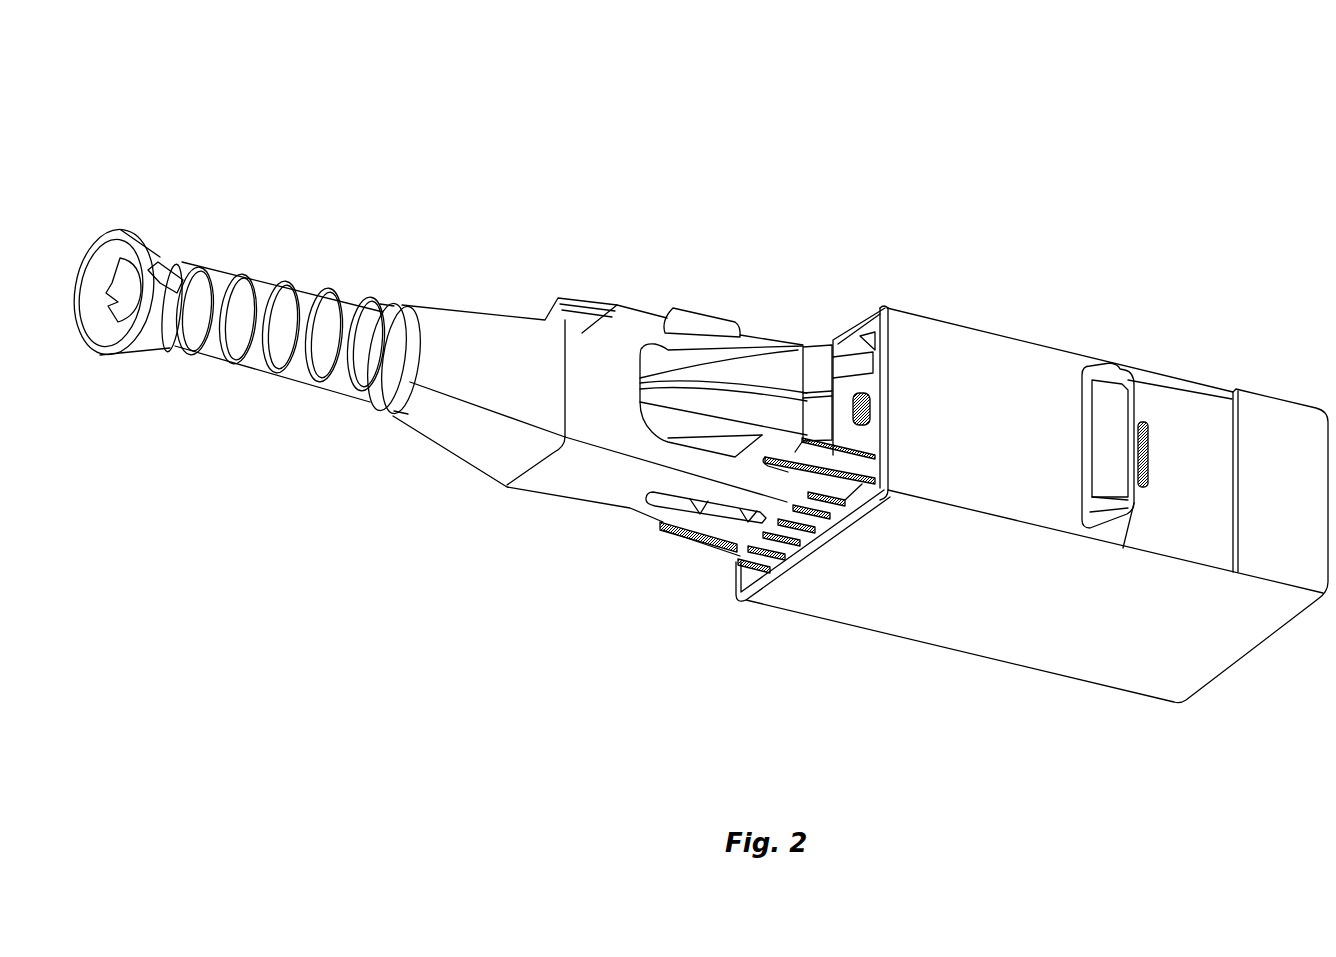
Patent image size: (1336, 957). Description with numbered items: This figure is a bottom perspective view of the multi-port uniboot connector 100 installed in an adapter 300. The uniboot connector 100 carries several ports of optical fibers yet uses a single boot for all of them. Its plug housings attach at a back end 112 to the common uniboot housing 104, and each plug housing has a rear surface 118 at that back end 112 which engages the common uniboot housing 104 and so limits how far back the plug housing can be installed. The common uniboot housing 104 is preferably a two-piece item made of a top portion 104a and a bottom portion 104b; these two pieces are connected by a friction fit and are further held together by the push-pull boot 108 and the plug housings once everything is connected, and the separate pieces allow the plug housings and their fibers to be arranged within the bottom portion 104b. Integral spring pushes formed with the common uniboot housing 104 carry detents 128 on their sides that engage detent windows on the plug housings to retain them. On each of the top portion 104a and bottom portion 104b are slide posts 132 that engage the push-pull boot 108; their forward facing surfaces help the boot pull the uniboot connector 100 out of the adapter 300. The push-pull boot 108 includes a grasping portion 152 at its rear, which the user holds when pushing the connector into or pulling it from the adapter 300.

The uniboot connector 100 is at (858, 136).
The common uniboot housing 104 is at (807, 312).
The top portion 104a is at (748, 368).
The bottom portion 104b is at (653, 532).
The push-pull boot 108 is at (250, 382).
The back end 112 is at (816, 345).
The rear surface 118 is at (843, 430).
The detents 128 is at (867, 393).
The slide posts 132 is at (718, 508).
The grasping portion 152 is at (165, 252).
The adapter 300 is at (1250, 636).